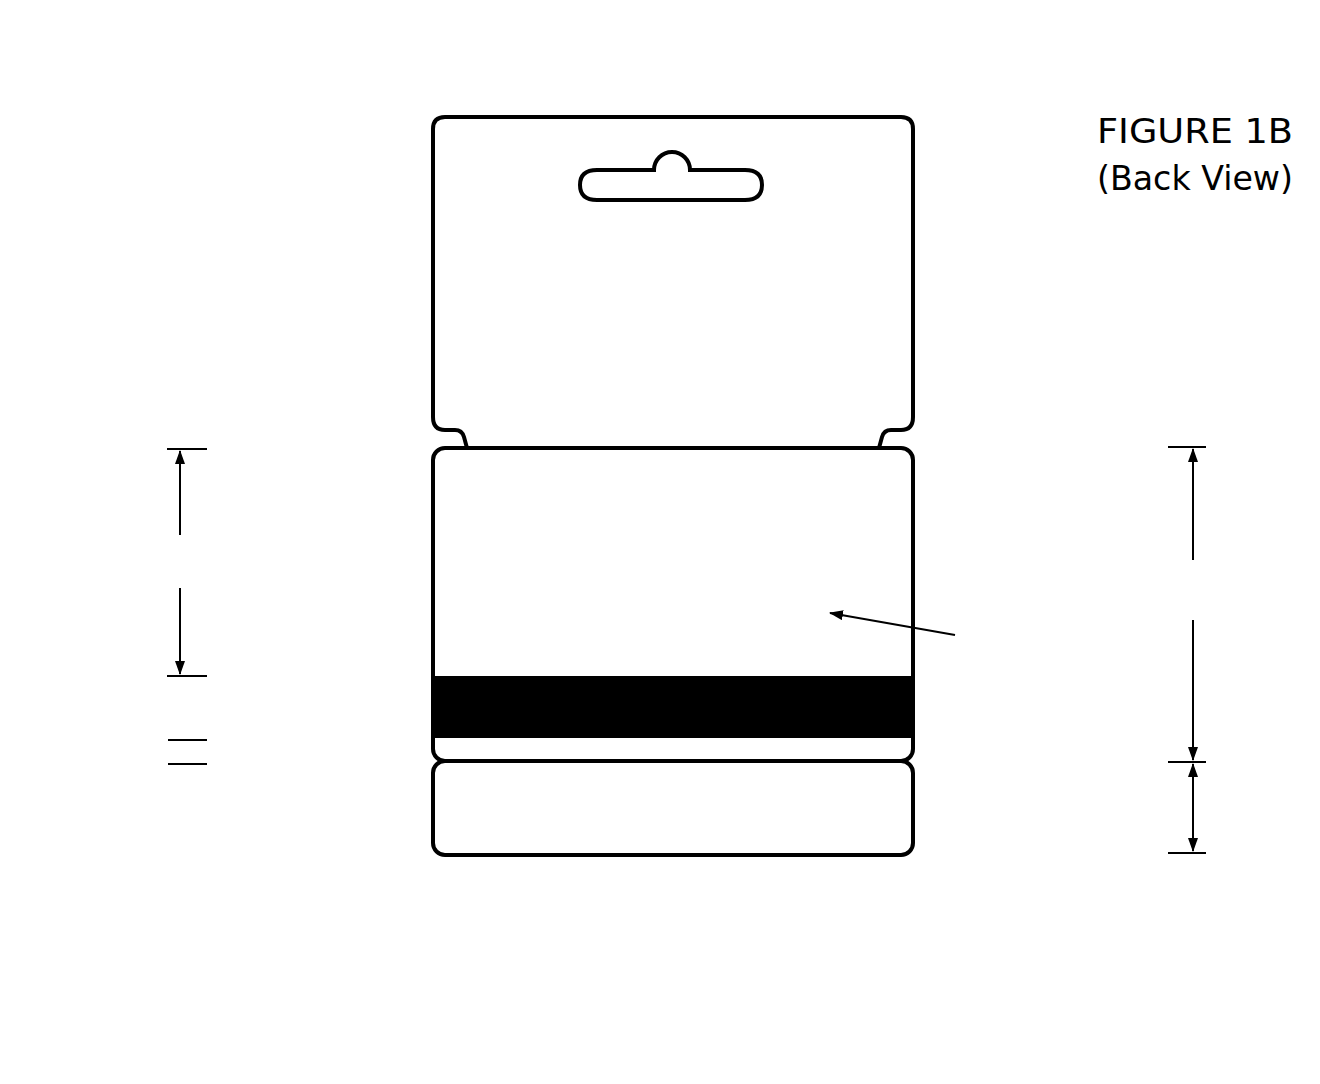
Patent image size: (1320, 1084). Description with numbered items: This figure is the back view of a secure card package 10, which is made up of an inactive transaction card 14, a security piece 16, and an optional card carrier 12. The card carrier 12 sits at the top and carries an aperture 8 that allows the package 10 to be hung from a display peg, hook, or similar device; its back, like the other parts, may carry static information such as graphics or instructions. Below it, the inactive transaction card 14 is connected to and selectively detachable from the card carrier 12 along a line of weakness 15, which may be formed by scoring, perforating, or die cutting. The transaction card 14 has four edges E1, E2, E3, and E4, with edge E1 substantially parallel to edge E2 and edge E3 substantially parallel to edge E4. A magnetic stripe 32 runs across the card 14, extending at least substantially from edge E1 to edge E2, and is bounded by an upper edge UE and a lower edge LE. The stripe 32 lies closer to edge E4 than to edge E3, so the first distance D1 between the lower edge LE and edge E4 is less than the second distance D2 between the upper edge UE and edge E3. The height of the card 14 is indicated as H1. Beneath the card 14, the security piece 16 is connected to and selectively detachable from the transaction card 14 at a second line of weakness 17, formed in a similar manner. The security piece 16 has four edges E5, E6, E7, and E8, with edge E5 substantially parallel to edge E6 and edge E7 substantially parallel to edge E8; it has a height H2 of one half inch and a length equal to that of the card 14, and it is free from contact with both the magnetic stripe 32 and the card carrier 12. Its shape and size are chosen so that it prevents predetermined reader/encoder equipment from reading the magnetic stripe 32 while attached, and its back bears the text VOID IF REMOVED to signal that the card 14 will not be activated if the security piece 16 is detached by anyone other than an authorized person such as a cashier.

The secure card package 10 is at (794, 104).
The card carrier 12 is at (456, 212).
The aperture 8 is at (772, 191).
The inactive transaction card 14 is at (498, 538).
The line of weakness 15 is at (772, 443).
The magnetic stripe 32 is at (530, 665).
The upper edge UE is at (653, 674).
The lower edge LE is at (857, 738).
The security piece 16 is at (456, 825).
The line of weakness 17 is at (854, 764).
The edge E1 is at (421, 477).
The edge E2 is at (927, 500).
The edge E3 is at (668, 453).
The edge E4 is at (476, 752).
The edge E5 is at (421, 785).
The edge E6 is at (924, 828).
The edge E7 is at (504, 769).
The edge E8 is at (719, 860).
The first distance D1 is at (164, 753).
The second distance D2 is at (183, 562).
The height H1 is at (1192, 604).
The height H2 is at (1198, 808).